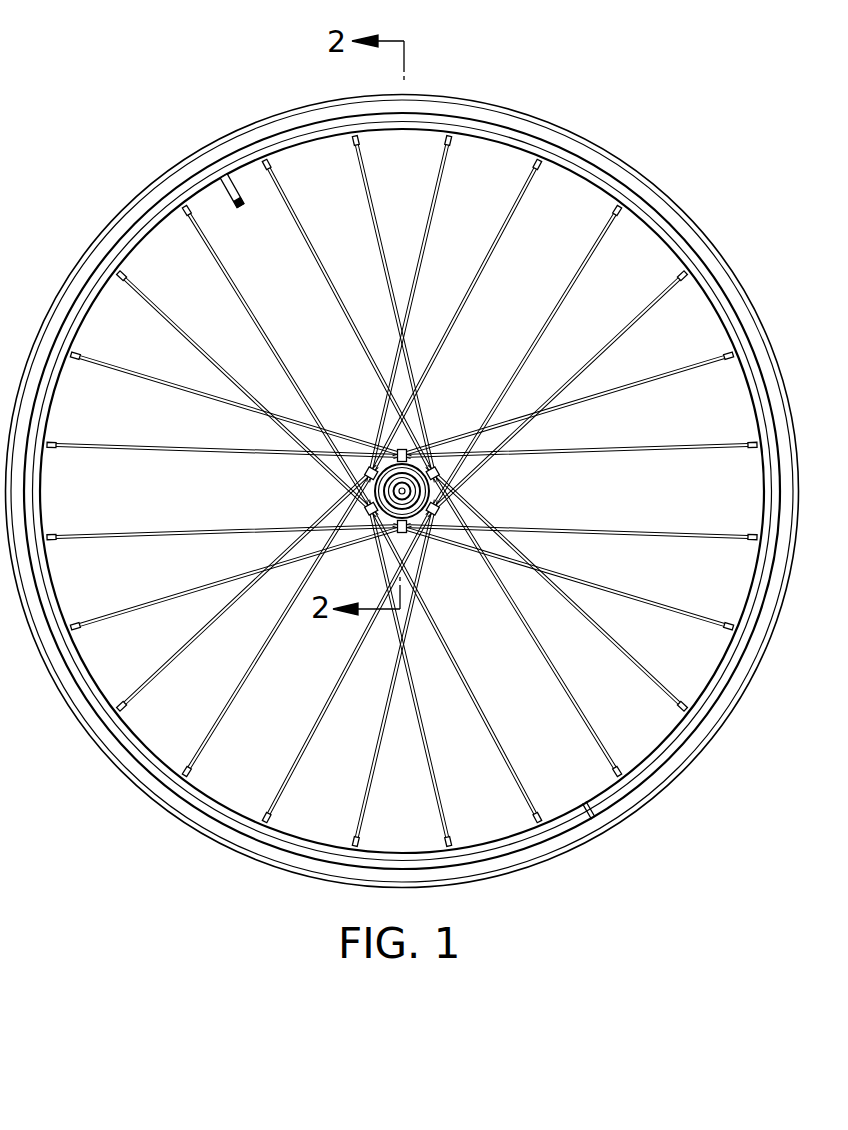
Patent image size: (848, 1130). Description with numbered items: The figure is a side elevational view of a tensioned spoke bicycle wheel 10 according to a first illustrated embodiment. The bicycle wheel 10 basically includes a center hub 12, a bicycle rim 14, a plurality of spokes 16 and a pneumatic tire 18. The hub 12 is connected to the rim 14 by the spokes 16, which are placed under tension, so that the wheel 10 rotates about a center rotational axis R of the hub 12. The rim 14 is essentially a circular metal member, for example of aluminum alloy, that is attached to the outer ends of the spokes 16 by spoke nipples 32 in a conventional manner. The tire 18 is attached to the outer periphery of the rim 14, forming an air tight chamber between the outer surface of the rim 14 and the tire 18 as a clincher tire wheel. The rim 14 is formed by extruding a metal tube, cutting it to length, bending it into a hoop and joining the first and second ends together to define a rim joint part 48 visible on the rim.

The bicycle wheel 10 is at (606, 70).
The center hub 12 is at (460, 488).
The bicycle rim 14 is at (502, 154).
The spokes 16 is at (584, 262).
The pneumatic tire 18 is at (508, 104).
The spoke nipples 32 is at (617, 203).
The rim joint part 48 is at (605, 805).
The center rotational axis R is at (388, 477).